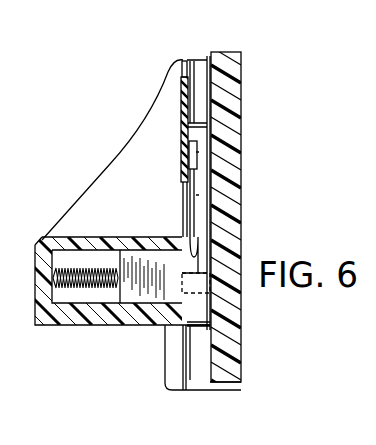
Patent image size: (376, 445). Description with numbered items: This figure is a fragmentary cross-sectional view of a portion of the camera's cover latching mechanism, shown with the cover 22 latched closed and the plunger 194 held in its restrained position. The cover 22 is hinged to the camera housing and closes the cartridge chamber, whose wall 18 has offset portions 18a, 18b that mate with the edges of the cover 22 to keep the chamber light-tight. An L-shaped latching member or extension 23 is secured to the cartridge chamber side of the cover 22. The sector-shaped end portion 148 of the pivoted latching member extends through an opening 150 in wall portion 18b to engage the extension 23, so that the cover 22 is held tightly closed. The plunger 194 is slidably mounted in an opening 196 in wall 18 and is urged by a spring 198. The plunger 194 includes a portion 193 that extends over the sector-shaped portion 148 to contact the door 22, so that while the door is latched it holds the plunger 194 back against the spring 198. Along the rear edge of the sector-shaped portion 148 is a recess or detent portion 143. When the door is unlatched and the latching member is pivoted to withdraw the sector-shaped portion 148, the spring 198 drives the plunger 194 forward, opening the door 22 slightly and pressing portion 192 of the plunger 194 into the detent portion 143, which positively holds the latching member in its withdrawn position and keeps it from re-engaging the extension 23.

The cover 22 is at (242, 82).
The wall 18 is at (108, 165).
The offset portion 18a is at (184, 362).
The wall portion 18b is at (198, 382).
The L-shaped latching member or extension 23 is at (180, 105).
The spring 198 is at (58, 226).
The opening 196 is at (81, 298).
The plunger 194 is at (108, 252).
The portion of plunger 192 is at (191, 238).
The recess or detent portion 143 is at (188, 142).
The sector-shaped end portion 148 is at (200, 243).
The portion of plunger 193 is at (210, 287).
The opening 150 is at (230, 322).